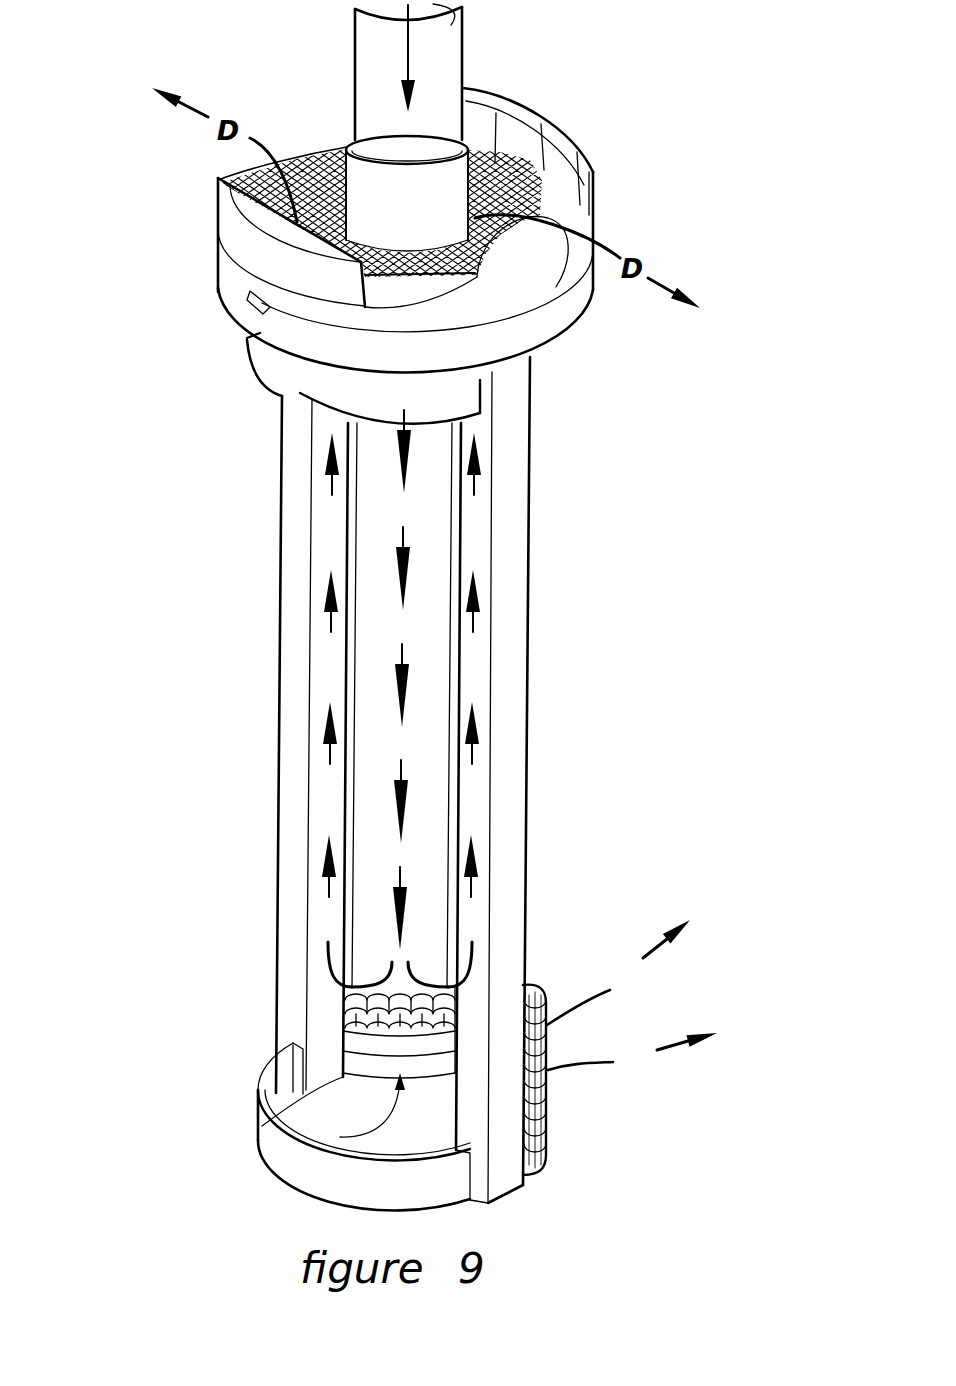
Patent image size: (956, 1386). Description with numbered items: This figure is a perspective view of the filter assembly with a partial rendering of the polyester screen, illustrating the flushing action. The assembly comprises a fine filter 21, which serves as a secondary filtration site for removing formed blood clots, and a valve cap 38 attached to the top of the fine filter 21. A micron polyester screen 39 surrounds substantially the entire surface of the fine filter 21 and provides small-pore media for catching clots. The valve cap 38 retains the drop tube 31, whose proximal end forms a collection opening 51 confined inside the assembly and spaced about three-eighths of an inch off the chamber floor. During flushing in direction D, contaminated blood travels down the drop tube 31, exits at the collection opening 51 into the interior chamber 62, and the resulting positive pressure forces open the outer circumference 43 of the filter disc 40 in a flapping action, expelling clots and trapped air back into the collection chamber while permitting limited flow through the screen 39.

The fine filter 21 is at (530, 508).
The drop tube 31 is at (463, 56).
The valve cap 38 is at (216, 291).
The micron polyester screen 39 is at (540, 995).
The filter disc 40 is at (474, 278).
The outer circumference 43 is at (313, 192).
The collection opening 51 is at (350, 1025).
The interior chamber 62 is at (268, 1105).